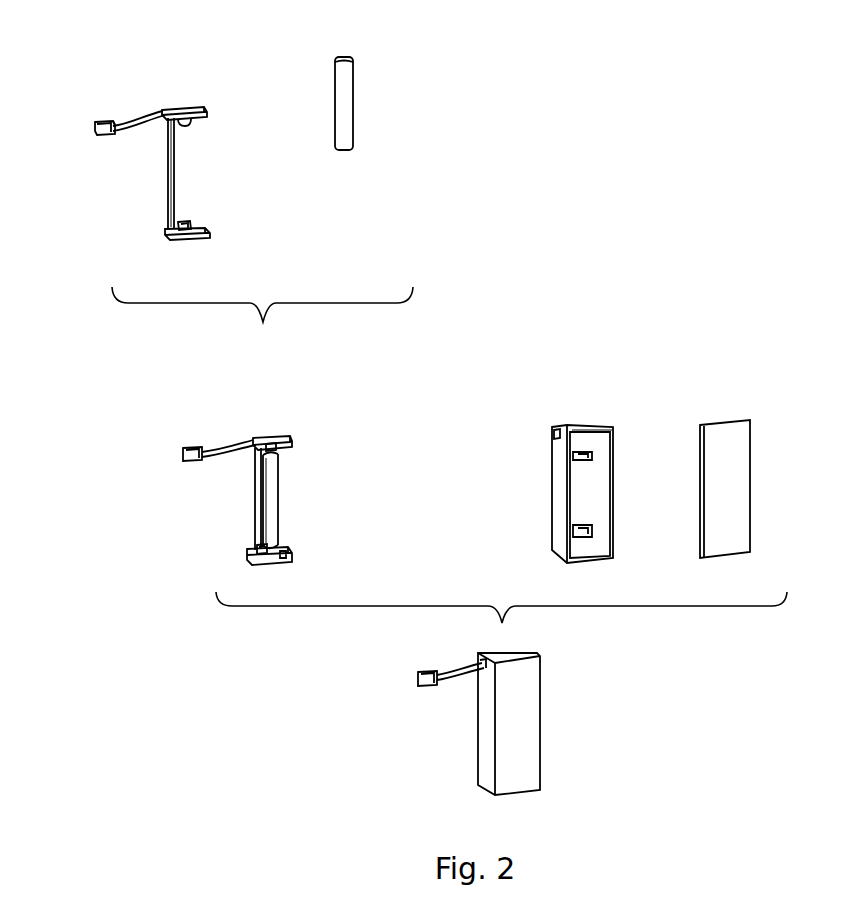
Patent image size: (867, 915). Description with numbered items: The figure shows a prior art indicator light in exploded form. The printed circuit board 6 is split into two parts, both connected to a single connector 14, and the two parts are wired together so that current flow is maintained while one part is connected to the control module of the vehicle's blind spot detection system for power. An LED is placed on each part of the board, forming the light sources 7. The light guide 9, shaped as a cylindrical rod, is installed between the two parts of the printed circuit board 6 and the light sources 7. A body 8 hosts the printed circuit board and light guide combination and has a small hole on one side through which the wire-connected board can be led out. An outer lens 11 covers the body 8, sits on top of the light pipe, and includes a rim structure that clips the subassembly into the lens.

The printed circuit board 6 is at (182, 108).
The light sources 7 is at (191, 223).
The body 8 is at (553, 421).
The light guide 9 is at (346, 151).
The outer lens 11 is at (715, 419).
The connector 14 is at (98, 138).